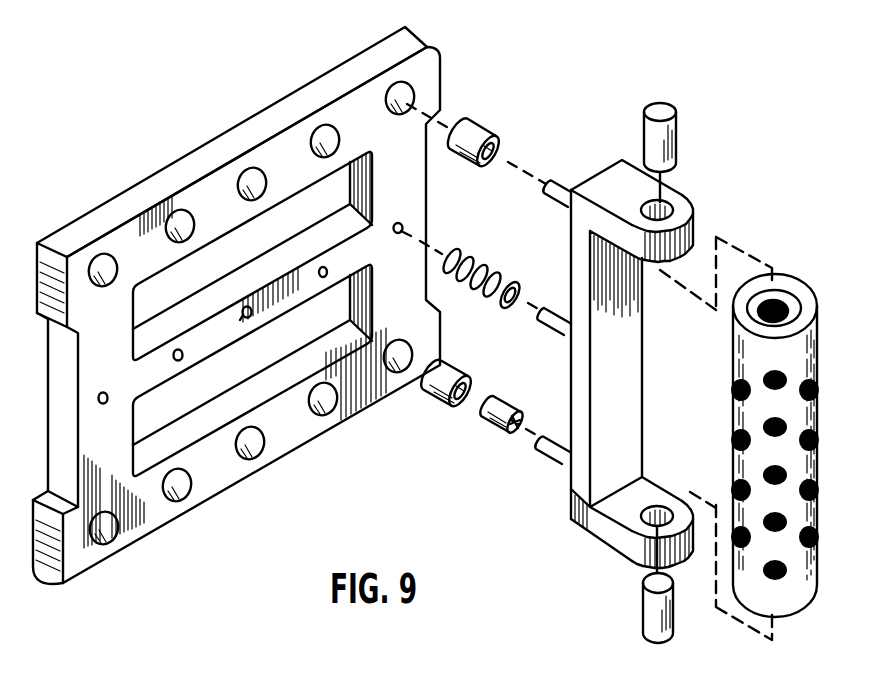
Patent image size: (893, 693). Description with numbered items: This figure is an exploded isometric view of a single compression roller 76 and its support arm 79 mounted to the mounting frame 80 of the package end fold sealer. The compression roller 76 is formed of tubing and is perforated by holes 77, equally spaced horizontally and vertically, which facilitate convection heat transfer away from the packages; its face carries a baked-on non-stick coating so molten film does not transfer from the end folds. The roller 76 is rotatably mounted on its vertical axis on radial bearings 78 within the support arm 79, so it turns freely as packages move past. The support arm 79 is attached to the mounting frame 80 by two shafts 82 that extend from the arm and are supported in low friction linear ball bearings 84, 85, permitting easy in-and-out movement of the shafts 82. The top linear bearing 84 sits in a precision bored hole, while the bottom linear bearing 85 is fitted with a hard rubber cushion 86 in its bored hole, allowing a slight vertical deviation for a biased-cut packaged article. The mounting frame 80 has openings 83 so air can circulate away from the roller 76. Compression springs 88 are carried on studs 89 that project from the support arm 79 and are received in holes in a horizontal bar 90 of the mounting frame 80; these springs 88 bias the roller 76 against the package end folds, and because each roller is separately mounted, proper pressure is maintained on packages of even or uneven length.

The compression roller 76 is at (797, 283).
The holes 77 is at (780, 423).
The radial bearings 78 is at (679, 135).
The support arm 79 is at (644, 357).
The mounting frame 80 is at (237, 125).
The shafts 82 is at (548, 182).
The openings 83 is at (152, 274).
The top linear bearing 84 is at (483, 126).
The bottom linear bearing 85 is at (490, 400).
The hard rubber cushion 86 is at (445, 367).
The compression springs 88 is at (482, 266).
The studs 89 is at (546, 319).
The horizontal bar 90 is at (212, 355).